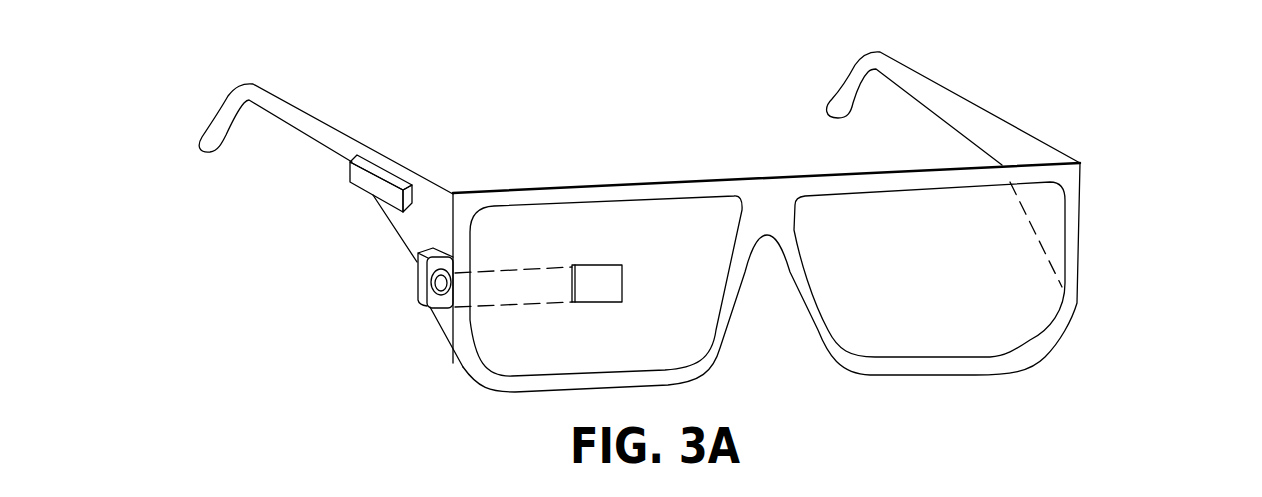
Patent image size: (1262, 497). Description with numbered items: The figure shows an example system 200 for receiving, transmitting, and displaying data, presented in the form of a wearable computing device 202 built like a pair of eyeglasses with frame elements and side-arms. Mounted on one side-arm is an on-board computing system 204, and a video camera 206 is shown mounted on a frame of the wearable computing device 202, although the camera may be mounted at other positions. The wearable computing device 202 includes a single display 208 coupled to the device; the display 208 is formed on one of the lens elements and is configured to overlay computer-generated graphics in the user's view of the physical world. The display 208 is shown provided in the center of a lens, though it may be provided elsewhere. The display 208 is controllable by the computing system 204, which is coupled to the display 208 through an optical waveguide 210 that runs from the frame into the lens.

The system 200 is at (1050, 83).
The wearable computing device 202 is at (1133, 247).
The on-board computing system 204 is at (367, 182).
The video camera 206 is at (417, 287).
The display 208 is at (593, 303).
The optical waveguide 210 is at (500, 308).